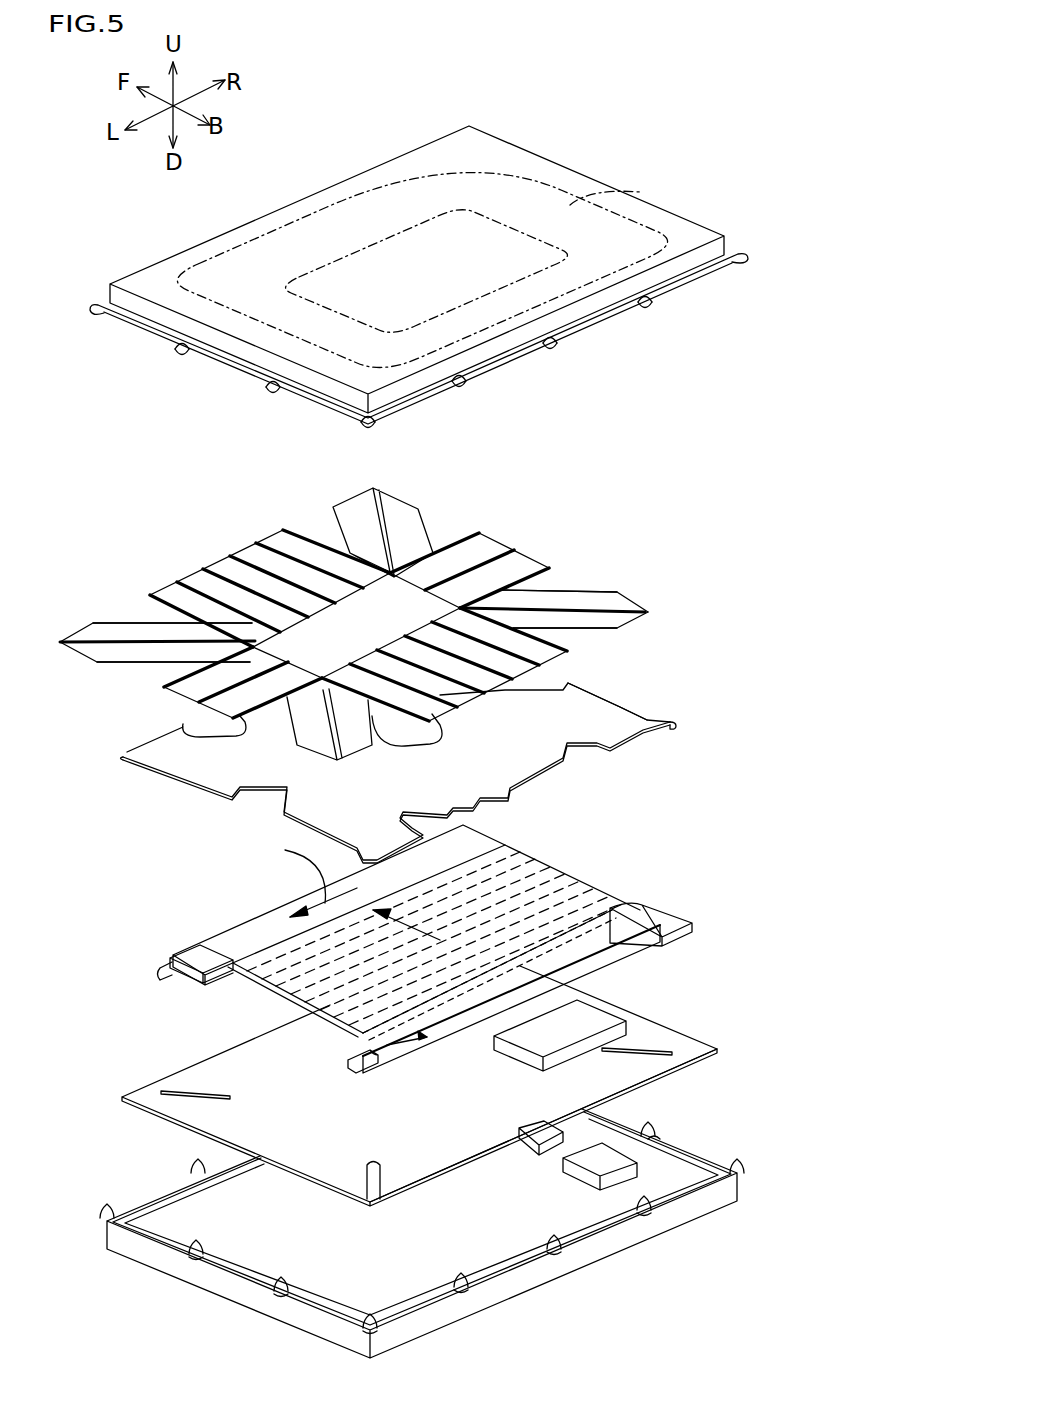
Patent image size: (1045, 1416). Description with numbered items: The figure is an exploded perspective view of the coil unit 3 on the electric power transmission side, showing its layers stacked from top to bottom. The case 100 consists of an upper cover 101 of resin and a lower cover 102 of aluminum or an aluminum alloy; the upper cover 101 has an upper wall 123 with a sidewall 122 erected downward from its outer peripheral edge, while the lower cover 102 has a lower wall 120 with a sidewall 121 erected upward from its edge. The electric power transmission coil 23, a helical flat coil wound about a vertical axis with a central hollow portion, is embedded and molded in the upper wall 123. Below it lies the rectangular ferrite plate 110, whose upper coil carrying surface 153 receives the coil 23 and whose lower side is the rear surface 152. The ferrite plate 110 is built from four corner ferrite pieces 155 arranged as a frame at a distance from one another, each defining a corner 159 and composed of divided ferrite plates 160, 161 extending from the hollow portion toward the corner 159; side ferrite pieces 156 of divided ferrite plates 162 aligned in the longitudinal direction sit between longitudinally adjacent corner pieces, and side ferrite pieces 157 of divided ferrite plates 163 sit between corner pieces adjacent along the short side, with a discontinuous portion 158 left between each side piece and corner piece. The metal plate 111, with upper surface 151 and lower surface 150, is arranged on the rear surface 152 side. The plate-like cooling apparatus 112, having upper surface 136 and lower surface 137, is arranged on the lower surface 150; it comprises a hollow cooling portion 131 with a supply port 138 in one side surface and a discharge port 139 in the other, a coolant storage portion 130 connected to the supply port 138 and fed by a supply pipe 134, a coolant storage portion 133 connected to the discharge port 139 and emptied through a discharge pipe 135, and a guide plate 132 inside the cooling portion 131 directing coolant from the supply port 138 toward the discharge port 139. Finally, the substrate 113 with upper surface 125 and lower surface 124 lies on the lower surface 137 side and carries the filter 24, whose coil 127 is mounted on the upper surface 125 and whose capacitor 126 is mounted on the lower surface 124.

The coil unit 3 is at (357, 121).
The electric power transmission coil 23 is at (640, 191).
The filter 24 is at (672, 1086).
The case 100 is at (507, 742).
The upper cover 101 is at (507, 277).
The lower cover 102 is at (512, 1233).
The ferrite plate 110 is at (463, 615).
The metal plate 111 is at (495, 773).
The cooling apparatus 112 is at (473, 948).
The substrate 113 is at (495, 1086).
The lower wall 120 is at (641, 1245).
The sidewall 121 is at (720, 1178).
The sidewall 122 is at (733, 262).
The upper wall 123 is at (733, 246).
The lower surface 124 is at (670, 1065).
The upper surface 125 is at (688, 1050).
The capacitor 126 is at (606, 1158).
The coil 127 is at (590, 1010).
The coolant storage portion 130 is at (660, 937).
The cooling portion 131 is at (518, 941).
The guide plate 132 is at (580, 875).
The coolant storage portion 133 is at (443, 904).
The supply pipe 134 is at (348, 1062).
The discharge pipe 135 is at (162, 975).
The upper surface 136 is at (258, 908).
The lower surface 137 is at (383, 1005).
The supply port 138 is at (560, 957).
The discharge port 139 is at (200, 948).
The lower surface 150 is at (637, 739).
The upper surface 151 is at (615, 727).
The rear surface 152 is at (617, 630).
The coil carrying surface 153 is at (617, 590).
The corner ferrite piece 155 is at (354, 571).
The side ferrite piece 156 is at (479, 578).
The side ferrite piece 157 is at (303, 588).
The discontinuous portion 158 is at (261, 721).
The corner 159 is at (350, 500).
The divided ferrite plate 160 is at (92, 625).
The divided ferrite plate 161 is at (150, 655).
The divided ferrite plate 162 is at (318, 470).
The divided ferrite plate 163 is at (515, 567).